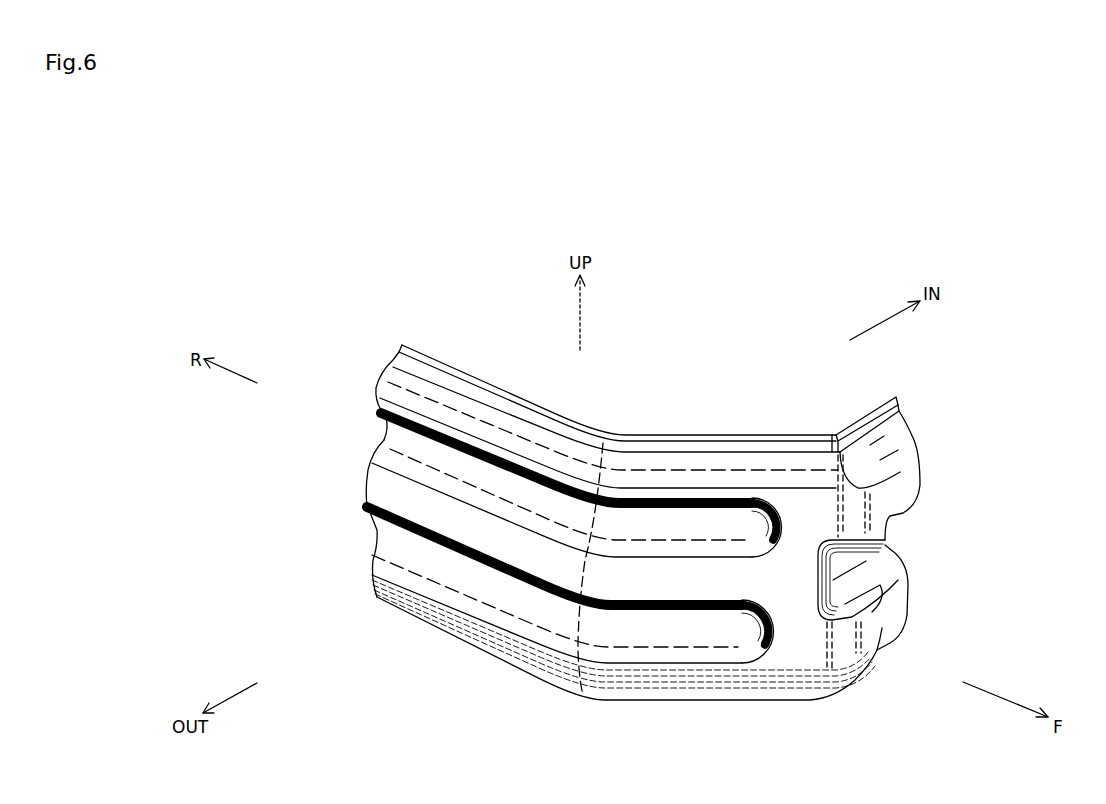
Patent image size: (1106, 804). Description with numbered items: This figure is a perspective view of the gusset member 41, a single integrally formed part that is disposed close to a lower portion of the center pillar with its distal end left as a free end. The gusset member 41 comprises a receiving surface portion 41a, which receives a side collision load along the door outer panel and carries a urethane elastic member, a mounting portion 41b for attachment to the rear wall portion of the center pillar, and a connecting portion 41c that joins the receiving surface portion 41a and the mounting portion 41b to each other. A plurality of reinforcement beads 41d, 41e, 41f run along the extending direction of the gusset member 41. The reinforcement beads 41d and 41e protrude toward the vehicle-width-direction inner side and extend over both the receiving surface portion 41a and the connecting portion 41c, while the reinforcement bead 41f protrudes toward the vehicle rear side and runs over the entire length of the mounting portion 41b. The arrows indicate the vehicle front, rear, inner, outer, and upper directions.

The gusset member 41 is at (657, 708).
The receiving surface portion 41a is at (470, 375).
The mounting portion 41b is at (862, 413).
The connecting portion 41c is at (705, 435).
The reinforcement bead 41d is at (390, 438).
The reinforcement bead 41e is at (385, 543).
The reinforcement bead 41f is at (885, 540).